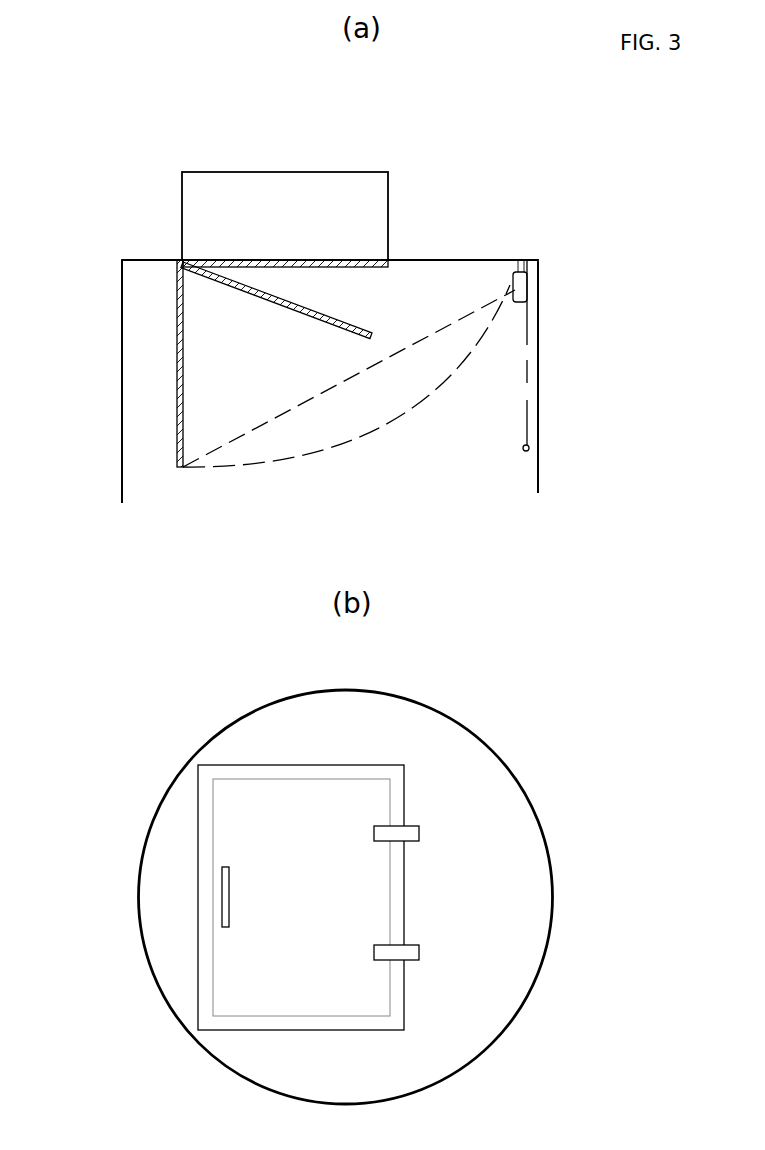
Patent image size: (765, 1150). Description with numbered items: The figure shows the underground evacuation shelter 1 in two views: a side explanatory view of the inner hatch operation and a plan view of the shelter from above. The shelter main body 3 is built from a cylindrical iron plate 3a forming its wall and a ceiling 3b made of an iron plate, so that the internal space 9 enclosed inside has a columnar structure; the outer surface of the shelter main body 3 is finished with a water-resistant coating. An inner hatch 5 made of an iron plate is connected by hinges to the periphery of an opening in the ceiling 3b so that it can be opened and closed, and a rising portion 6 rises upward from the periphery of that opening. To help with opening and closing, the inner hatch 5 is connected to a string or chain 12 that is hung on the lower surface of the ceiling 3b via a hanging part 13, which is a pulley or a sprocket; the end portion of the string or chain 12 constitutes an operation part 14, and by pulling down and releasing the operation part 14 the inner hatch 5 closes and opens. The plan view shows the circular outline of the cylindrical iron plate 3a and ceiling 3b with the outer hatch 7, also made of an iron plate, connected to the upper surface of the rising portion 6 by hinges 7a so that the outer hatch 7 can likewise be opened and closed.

The underground evacuation shelter 1 is at (150, 192).
The shelter main body 3 is at (532, 233).
The cylindrical iron plate 3a is at (538, 362).
The ceiling 3b is at (422, 258).
The inner hatch 5 is at (263, 305).
The rising portion 6 is at (378, 205).
The internal space 9 is at (140, 413).
The string or chain 12 is at (340, 443).
The hanging part 13 is at (520, 287).
The operation part 14 is at (525, 418).
The outer hatch 7 is at (233, 830).
The hinges 7a is at (412, 832).